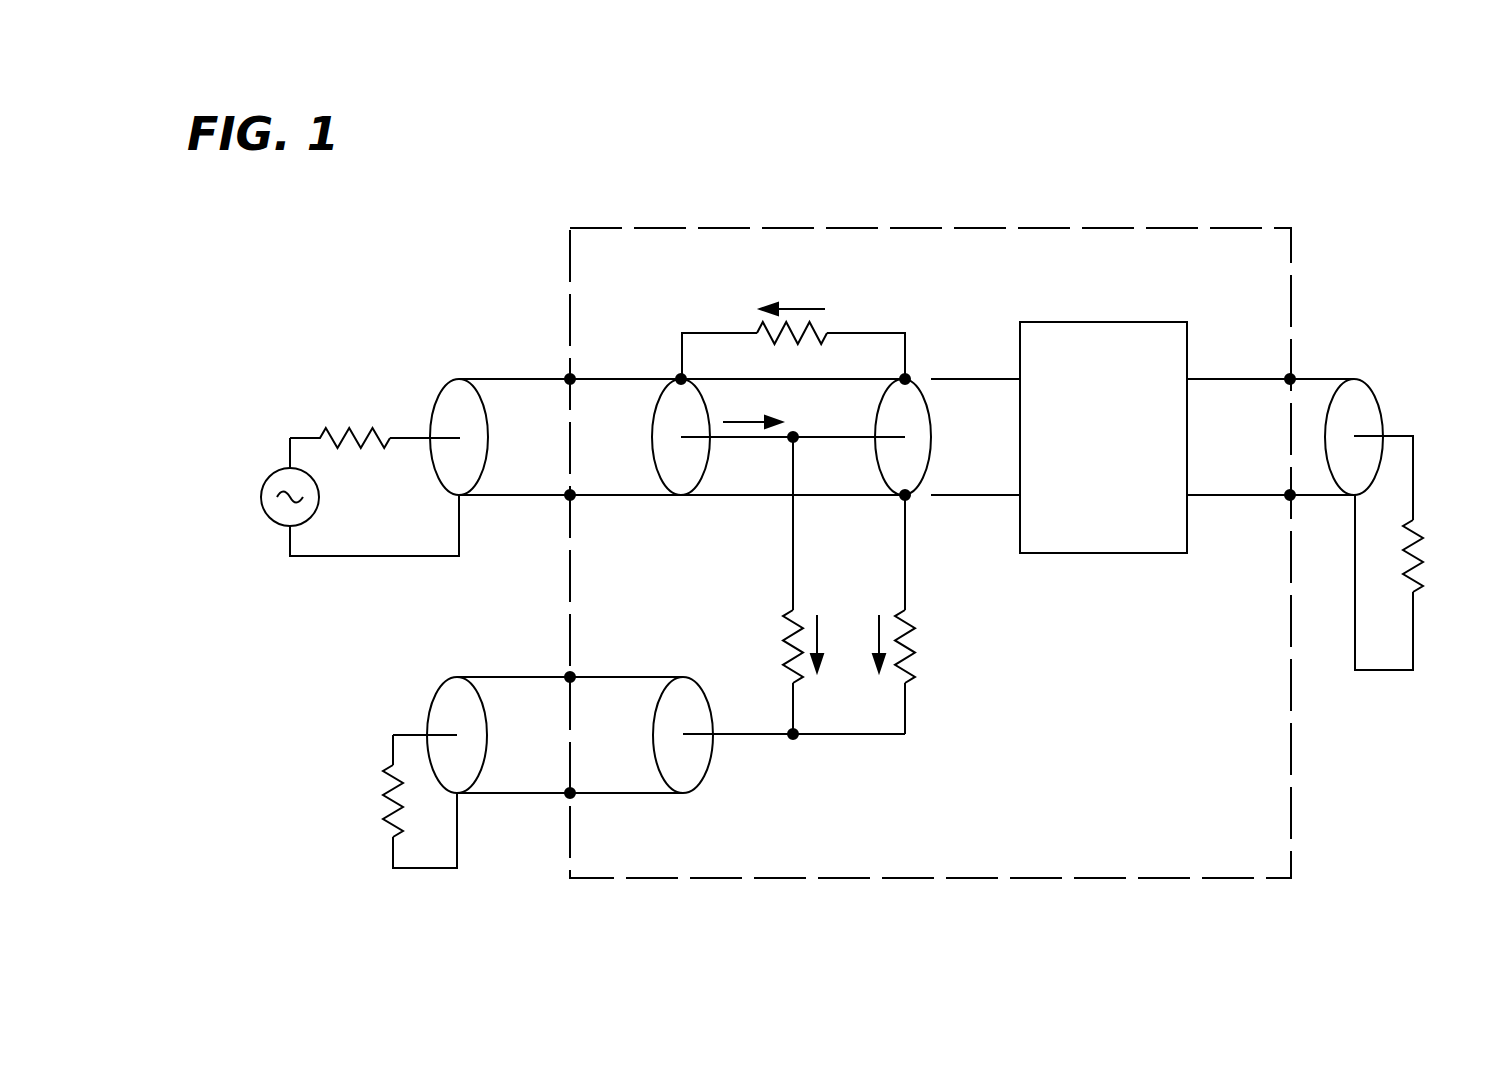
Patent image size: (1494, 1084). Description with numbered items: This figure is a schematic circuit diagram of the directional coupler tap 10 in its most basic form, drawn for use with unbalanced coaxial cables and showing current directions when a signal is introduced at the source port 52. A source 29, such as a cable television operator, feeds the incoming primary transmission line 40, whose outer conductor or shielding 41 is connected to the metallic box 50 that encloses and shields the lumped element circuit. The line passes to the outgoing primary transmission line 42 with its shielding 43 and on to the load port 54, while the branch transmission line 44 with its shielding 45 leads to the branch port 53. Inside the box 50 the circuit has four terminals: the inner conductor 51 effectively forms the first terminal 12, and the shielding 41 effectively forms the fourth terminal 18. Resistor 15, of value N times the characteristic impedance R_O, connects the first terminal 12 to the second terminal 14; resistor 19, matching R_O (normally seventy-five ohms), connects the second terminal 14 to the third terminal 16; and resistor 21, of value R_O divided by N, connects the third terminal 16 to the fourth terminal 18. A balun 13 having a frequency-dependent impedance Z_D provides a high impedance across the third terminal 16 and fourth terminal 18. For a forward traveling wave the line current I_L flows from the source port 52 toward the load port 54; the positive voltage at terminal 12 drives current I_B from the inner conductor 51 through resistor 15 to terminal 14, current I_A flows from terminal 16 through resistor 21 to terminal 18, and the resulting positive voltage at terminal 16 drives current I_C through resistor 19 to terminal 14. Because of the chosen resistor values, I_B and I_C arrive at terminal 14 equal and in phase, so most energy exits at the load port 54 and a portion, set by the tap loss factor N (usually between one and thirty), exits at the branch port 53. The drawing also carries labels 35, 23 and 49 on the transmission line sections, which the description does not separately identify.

The directional coupler tap 10 is at (877, 132).
The metallic box 50 is at (643, 228).
The source port 52 is at (330, 338).
The source 29 is at (273, 523).
The source center conductor 35 is at (408, 437).
The shielding of incoming primary transmission line 41 is at (477, 397).
The incoming primary transmission line 40 is at (518, 498).
The outer conductor connection 23 is at (622, 498).
The fourth terminal 18 is at (681, 377).
The main coaxial transmission line 49 is at (893, 410).
The inner conductor 51 is at (697, 440).
The first terminal 12 is at (795, 442).
The third terminal 16 is at (907, 378).
The resistor R_A 21 is at (822, 332).
The resistor R_B 15 is at (787, 640).
The resistor R_C 19 is at (912, 675).
The second terminal 14 is at (797, 738).
The balun 13 is at (1137, 320).
The load port 54 is at (990, 497).
The outgoing primary transmission line 42 is at (1317, 377).
The shielding of outgoing primary transmission line 43 is at (1333, 480).
The branch transmission line 44 is at (510, 677).
The shielding of branch transmission line 45 is at (477, 778).
The branch port 53 is at (368, 637).